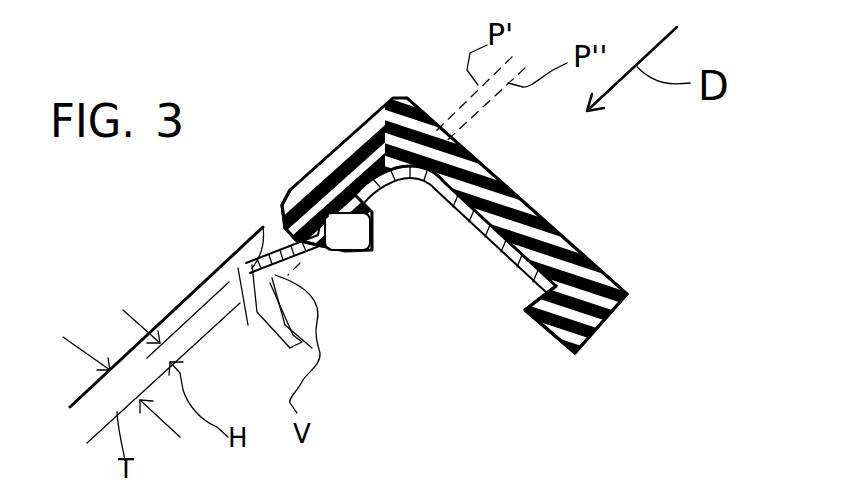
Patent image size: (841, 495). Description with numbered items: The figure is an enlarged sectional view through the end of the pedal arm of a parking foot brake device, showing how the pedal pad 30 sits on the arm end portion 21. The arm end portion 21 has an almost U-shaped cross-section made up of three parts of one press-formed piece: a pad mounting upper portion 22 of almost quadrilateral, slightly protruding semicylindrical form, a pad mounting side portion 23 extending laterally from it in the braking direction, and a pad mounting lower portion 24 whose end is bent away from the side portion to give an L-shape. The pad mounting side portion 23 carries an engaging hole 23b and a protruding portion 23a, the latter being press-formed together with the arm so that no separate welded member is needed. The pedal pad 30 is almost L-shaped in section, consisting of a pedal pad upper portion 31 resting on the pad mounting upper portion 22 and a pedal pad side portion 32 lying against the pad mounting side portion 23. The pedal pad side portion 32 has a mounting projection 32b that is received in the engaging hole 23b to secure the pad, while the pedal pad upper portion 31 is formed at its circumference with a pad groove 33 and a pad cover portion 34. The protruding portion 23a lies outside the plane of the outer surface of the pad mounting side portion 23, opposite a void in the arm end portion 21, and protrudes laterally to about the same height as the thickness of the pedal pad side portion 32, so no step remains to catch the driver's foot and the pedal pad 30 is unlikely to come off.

The arm end portion 21 is at (405, 315).
The pad mounting upper portion 22 is at (480, 233).
The pad mounting side portion 23 is at (389, 203).
The protruding portion 23a is at (233, 267).
The engaging hole 23b is at (297, 196).
The pad mounting lower portion 24 is at (248, 325).
The pedal pad 30 is at (404, 82).
The pedal pad upper portion 31 is at (513, 193).
The pedal pad side portion 32 is at (363, 157).
The mounting projection 32b is at (357, 250).
The pad groove 33 is at (568, 282).
The pad cover portion 34 is at (537, 305).